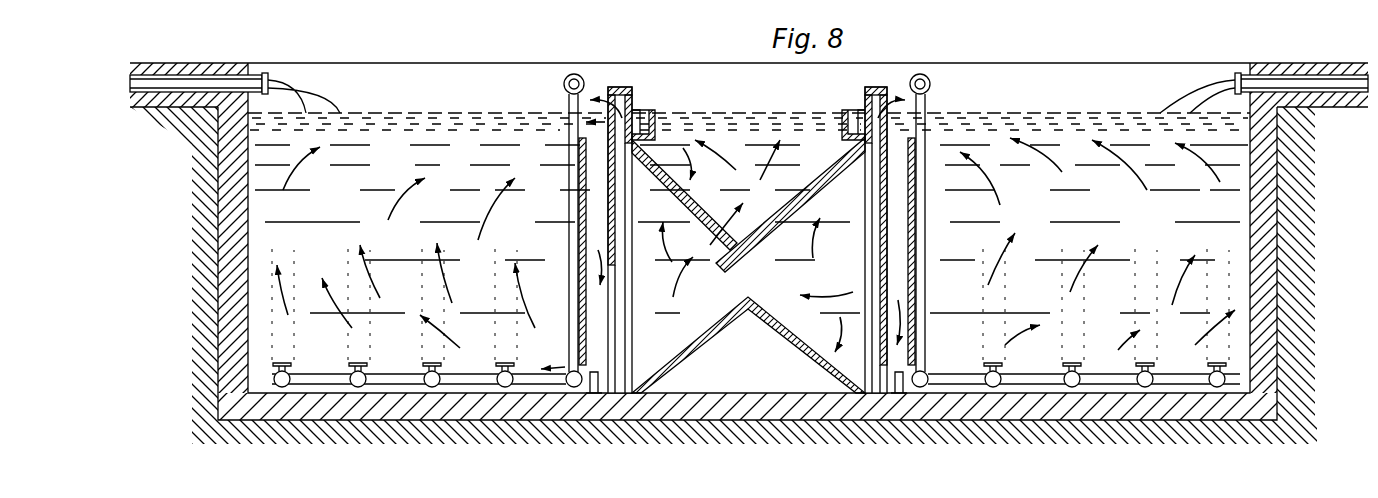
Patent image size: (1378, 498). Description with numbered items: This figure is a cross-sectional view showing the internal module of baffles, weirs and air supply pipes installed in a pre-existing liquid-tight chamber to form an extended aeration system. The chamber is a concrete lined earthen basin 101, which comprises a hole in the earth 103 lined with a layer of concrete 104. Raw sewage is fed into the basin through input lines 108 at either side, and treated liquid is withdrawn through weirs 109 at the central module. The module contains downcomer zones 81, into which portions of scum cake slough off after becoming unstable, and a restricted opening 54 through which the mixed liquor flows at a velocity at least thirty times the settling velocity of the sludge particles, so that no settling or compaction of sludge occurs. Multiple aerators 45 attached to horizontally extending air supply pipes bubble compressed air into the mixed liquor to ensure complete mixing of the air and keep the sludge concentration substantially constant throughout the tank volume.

The concrete lined earthen basin 101 is at (1325, 268).
The hole in the earth 103 is at (1295, 363).
The layer of concrete 104 is at (232, 236).
The input lines 108 is at (221, 82).
The downcomer zones 81 is at (722, 85).
The weirs 109 is at (845, 112).
The restricted opening 54 is at (590, 378).
The aerators 45 is at (356, 365).